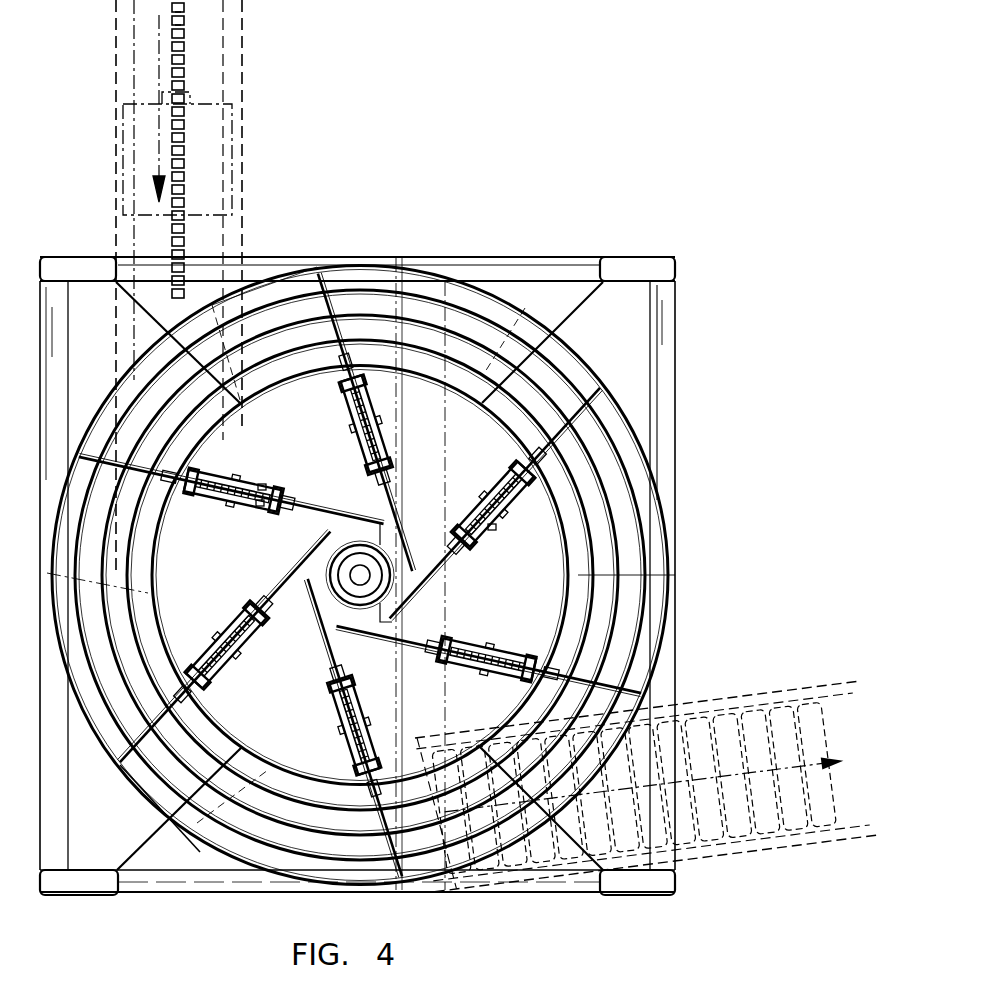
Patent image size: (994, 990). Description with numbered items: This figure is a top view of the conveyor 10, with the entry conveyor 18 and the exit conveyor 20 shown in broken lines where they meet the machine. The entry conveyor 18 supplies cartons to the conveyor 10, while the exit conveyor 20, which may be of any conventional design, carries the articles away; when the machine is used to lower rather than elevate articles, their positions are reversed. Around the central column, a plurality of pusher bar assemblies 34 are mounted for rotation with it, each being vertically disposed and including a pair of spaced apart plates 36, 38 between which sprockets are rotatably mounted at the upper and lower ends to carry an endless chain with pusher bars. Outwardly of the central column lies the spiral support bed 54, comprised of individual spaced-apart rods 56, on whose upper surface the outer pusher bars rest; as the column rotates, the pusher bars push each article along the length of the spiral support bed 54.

The conveyor 10 is at (517, 234).
The entry conveyor 18 is at (241, 91).
The exit conveyor 20 is at (746, 691).
The pusher bar assembly 34 is at (350, 410).
The plate 36 is at (262, 508).
The plate 38 is at (264, 490).
The spiral support bed 54 is at (652, 504).
The rods 56 is at (620, 448).